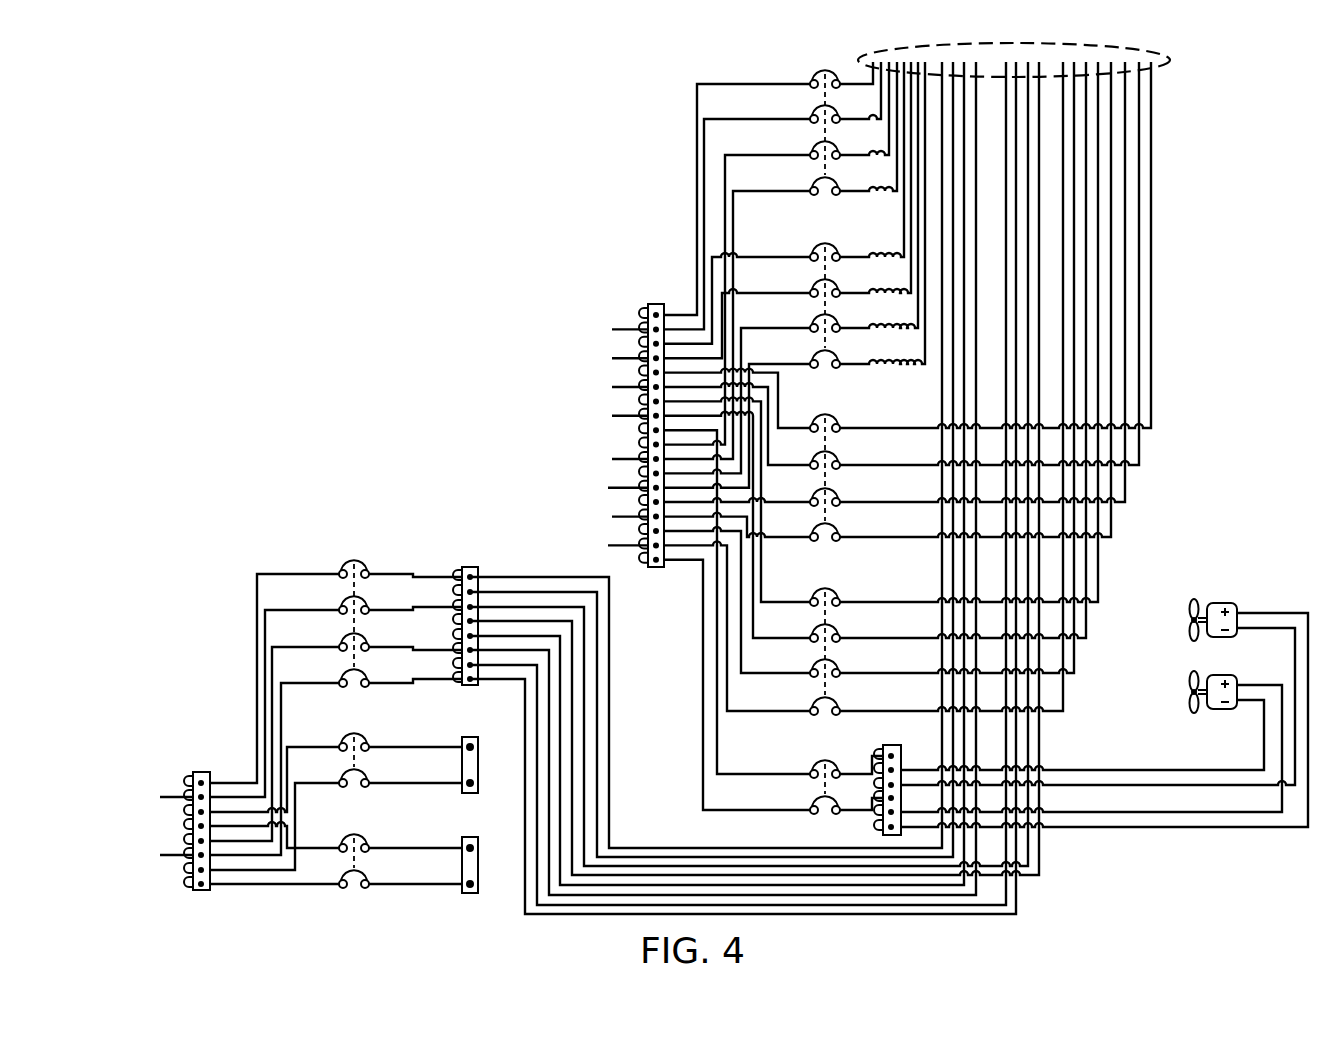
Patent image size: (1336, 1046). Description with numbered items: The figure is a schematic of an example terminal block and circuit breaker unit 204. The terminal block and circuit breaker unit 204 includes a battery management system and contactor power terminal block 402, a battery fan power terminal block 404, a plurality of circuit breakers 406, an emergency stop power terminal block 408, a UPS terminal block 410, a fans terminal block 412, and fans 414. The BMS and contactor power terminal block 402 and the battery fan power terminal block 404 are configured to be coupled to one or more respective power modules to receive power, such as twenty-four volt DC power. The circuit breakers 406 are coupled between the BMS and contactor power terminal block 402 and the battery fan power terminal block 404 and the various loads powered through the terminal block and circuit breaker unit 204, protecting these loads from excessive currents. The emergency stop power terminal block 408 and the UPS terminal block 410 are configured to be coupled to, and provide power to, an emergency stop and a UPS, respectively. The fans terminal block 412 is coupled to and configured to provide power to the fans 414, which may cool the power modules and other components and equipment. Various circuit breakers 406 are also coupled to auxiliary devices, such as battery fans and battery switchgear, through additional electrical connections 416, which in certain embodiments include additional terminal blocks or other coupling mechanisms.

The terminal block and circuit breaker unit 204 is at (658, 113).
The BMS and contactor power terminal block 402 is at (205, 772).
The battery fan power terminal block 404 is at (652, 304).
The circuit breakers 406 is at (809, 73).
The emergency stop power terminal block 408 is at (464, 737).
The UPS terminal block 410 is at (464, 837).
The fans terminal block 412 is at (883, 751).
The fans 414 is at (1223, 602).
The additional electrical connections 416 is at (1172, 63).